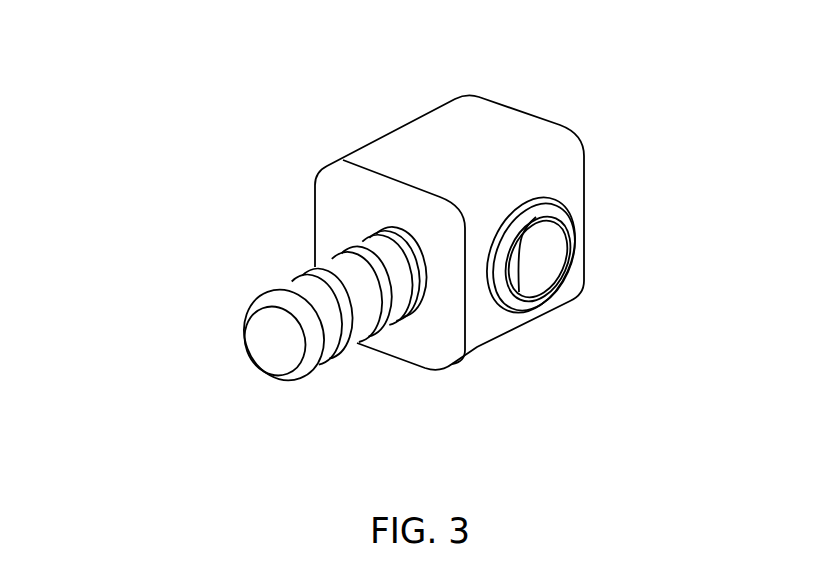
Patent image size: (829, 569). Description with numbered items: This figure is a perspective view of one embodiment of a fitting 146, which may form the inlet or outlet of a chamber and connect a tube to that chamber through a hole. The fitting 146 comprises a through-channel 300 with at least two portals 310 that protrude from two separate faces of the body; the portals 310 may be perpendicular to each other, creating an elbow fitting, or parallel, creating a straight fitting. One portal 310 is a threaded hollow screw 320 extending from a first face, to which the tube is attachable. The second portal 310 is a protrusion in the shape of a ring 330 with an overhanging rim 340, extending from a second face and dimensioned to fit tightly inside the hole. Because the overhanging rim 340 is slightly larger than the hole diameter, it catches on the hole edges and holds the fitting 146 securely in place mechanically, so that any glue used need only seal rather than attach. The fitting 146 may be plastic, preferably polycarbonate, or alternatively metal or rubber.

The fitting 146 is at (145, 72).
The through-channel 300 is at (520, 255).
The portals 310 is at (268, 346).
The threaded hollow screw 320 is at (313, 270).
The ring 330 is at (529, 302).
The overhanging rim 340 is at (489, 284).